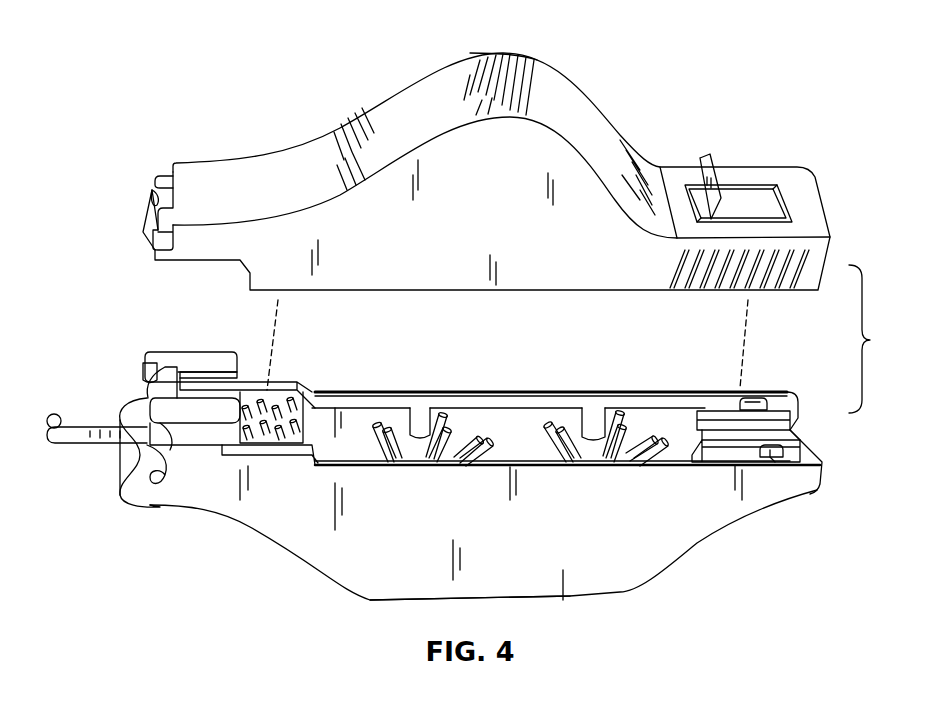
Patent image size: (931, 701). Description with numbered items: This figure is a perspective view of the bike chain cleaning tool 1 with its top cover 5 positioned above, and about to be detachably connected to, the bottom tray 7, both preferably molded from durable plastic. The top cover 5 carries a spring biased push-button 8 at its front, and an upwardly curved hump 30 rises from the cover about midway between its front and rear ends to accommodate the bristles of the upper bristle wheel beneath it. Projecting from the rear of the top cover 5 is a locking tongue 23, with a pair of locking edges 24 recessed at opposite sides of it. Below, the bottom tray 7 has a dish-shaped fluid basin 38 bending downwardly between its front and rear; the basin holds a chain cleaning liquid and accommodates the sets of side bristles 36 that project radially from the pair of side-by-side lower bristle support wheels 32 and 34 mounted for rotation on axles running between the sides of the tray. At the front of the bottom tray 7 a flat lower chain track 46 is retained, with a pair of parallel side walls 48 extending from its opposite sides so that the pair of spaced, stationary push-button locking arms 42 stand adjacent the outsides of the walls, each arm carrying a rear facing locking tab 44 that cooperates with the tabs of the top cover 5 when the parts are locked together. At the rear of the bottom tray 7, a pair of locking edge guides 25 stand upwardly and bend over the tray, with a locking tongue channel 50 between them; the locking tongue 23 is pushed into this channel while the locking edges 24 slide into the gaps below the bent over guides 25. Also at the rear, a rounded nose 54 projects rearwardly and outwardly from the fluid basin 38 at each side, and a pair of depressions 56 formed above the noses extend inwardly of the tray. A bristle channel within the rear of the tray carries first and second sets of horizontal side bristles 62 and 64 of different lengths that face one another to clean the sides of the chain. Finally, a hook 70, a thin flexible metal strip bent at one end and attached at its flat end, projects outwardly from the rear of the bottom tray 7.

The bike chain cleaning tool 1 is at (871, 339).
The top cover 5 is at (296, 148).
The bottom tray 7 is at (696, 544).
The push-button 8 is at (712, 163).
The locking tongue 23 is at (143, 197).
The locking edges 24 is at (172, 172).
The locking edge guides 25 is at (191, 350).
The curved hump 30 is at (498, 52).
The lower bristle support wheel 32 is at (590, 437).
The lower bristle support wheel 34 is at (420, 437).
The side bristles 36 is at (424, 458).
The dish-shaped fluid basin 38 is at (320, 568).
The stationary push-button locking arms 42 is at (775, 460).
The rear facing locking tab 44 is at (765, 398).
The lower chain track 46 is at (736, 438).
The side walls 48 is at (714, 420).
The locking tongue channel 50 is at (165, 385).
The rounded nose 54 is at (125, 405).
The depressions 56 is at (157, 478).
The first set of horizontal side bristles 62 is at (291, 398).
The second set of horizontal side bristles 64 is at (293, 440).
The hook 70 is at (67, 441).